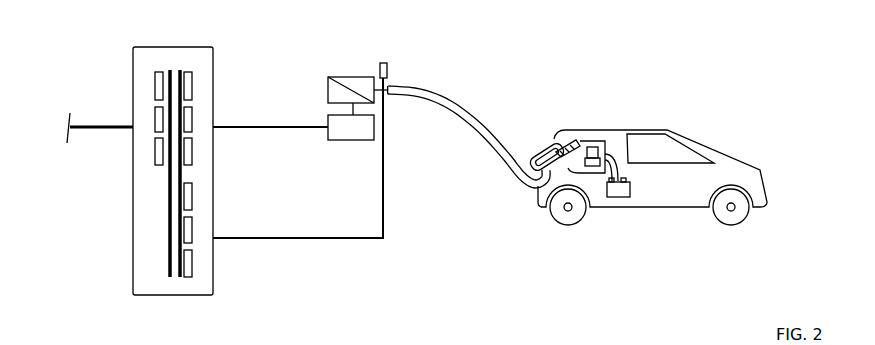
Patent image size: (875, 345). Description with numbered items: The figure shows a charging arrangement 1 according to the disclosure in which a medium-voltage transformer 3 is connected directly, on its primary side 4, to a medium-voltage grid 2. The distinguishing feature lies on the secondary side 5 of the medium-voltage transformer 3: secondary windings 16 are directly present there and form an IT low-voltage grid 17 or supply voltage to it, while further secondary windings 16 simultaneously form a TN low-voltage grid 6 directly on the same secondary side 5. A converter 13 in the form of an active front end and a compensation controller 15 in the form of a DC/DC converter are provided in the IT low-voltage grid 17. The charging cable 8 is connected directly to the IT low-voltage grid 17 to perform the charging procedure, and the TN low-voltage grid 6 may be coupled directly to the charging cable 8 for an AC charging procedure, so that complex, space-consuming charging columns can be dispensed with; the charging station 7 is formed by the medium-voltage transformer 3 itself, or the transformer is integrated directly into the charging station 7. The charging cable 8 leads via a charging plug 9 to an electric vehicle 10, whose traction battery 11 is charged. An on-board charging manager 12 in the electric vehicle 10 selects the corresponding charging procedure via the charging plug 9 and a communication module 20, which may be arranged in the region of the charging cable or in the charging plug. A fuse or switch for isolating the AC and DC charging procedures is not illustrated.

The charging arrangement 1 is at (539, 59).
The medium-voltage grid 2 is at (75, 100).
The medium-voltage transformer 3 is at (141, 47).
The primary side 4 is at (146, 118).
The secondary side 5 is at (209, 112).
The TN low-voltage grid 6 is at (342, 241).
The charging station 7 is at (207, 45).
The charging cable 8 is at (479, 124).
The charging plug 9 is at (550, 147).
The electric vehicle 10 is at (718, 149).
The traction battery 11 is at (621, 191).
The on-board charging manager 12 is at (604, 150).
The converter 13 is at (353, 140).
The compensation controller 15 is at (346, 77).
The secondary windings 16 is at (192, 74).
The IT low-voltage grid 17 is at (298, 124).
The communication module 20 is at (388, 72).